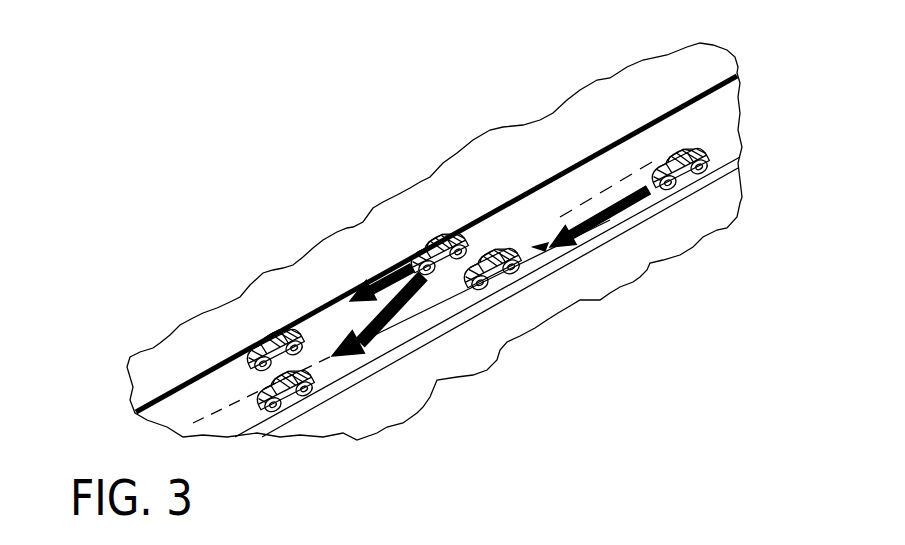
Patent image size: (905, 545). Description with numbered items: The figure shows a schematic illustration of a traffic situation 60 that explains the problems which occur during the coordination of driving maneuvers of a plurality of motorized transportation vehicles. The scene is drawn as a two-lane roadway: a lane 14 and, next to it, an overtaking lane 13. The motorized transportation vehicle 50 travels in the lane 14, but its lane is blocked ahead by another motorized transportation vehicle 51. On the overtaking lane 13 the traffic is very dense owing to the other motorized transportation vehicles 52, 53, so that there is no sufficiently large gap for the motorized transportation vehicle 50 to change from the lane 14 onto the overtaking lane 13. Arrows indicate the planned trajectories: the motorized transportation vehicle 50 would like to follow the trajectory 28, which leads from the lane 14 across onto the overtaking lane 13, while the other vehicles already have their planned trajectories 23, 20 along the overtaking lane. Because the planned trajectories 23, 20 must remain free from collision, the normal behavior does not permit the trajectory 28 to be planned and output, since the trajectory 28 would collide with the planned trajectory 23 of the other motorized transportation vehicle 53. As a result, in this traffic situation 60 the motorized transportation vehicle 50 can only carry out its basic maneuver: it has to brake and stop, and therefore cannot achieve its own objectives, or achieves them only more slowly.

The overtaking lane 13 is at (545, 253).
The lane 14 is at (582, 186).
The planned trajectory 20 is at (366, 290).
The planned trajectory 23 is at (435, 310).
The trajectory 28 is at (380, 356).
The motorized transportation vehicle 50 is at (445, 232).
The motorized transportation vehicle 51 is at (283, 327).
The motorized transportation vehicle 52 is at (327, 383).
The motorized transportation vehicle 53 is at (543, 249).
The traffic situation 60 is at (206, 297).